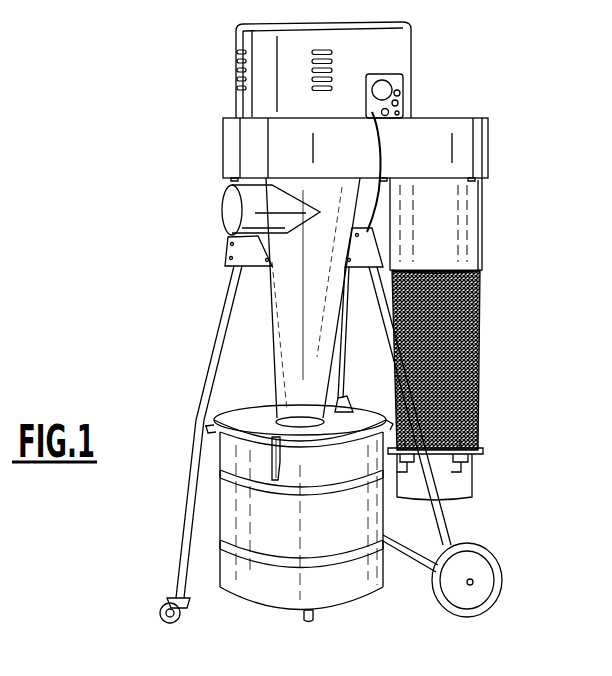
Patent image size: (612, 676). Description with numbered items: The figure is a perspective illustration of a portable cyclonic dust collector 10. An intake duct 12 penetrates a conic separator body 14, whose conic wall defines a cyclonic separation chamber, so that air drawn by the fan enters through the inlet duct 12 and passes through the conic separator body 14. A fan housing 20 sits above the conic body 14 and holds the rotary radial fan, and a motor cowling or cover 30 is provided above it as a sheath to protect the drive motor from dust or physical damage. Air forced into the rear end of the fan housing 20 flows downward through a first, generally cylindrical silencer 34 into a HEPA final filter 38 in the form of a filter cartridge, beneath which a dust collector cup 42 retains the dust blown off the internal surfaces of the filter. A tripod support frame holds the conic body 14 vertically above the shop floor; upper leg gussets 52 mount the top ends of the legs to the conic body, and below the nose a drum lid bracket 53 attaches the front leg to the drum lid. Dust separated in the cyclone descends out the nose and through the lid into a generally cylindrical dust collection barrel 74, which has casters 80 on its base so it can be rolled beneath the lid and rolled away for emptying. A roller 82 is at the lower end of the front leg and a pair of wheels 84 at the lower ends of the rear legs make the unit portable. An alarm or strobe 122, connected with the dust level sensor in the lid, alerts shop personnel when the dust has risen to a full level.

The portable cyclonic dust collector 10 is at (80, 187).
The intake duct 12 is at (221, 203).
The conic separator body 14 is at (275, 313).
The fan housing 20 is at (489, 148).
The motor cowling 30 is at (412, 33).
The first silencer 34 is at (483, 222).
The HEPA final filter 38 is at (484, 369).
The dust collector cup 42 is at (474, 485).
The upper leg gussets 52 is at (224, 247).
The drum lid bracket 53 is at (212, 432).
The dust collection barrel 74 is at (353, 588).
The casters 80 is at (307, 618).
The roller 82 is at (161, 618).
The wheels 84 is at (496, 590).
The alarm or strobe 122 is at (383, 88).